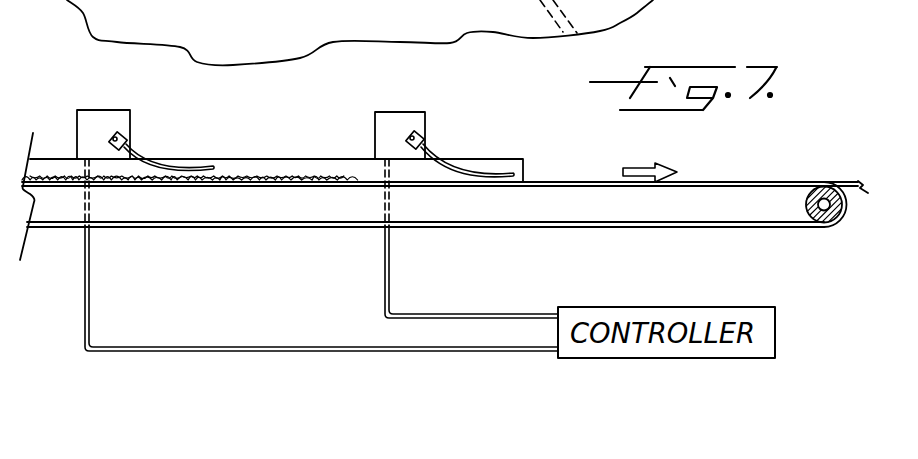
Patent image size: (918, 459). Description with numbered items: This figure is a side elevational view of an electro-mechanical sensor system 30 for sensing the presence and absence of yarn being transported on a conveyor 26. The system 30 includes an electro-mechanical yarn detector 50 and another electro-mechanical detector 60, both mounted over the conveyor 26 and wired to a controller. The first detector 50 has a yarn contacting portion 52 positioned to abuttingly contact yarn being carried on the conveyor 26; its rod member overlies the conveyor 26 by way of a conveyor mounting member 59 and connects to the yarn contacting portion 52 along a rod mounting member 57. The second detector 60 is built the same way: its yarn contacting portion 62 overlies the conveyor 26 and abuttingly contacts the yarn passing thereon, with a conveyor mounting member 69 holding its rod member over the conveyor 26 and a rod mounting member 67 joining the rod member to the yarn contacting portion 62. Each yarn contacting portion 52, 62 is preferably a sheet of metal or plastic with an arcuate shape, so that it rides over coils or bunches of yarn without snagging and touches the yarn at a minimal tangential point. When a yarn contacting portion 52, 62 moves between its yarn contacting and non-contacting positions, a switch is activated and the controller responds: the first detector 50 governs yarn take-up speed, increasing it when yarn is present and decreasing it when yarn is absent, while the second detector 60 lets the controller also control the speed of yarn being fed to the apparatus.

The electro-mechanical sensor system 30 is at (444, 136).
The conveyor 26 is at (765, 200).
The conveyor mounting member 69 is at (90, 117).
The rod mounting member 67 is at (115, 133).
The electro-mechanical detector 60 is at (172, 122).
The yarn contacting portion 62 is at (173, 163).
The conveyor mounting member 59 is at (422, 72).
The electro-mechanical yarn detector 50 is at (469, 115).
The rod mounting member 57 is at (418, 132).
The yarn contacting portion 52 is at (467, 165).